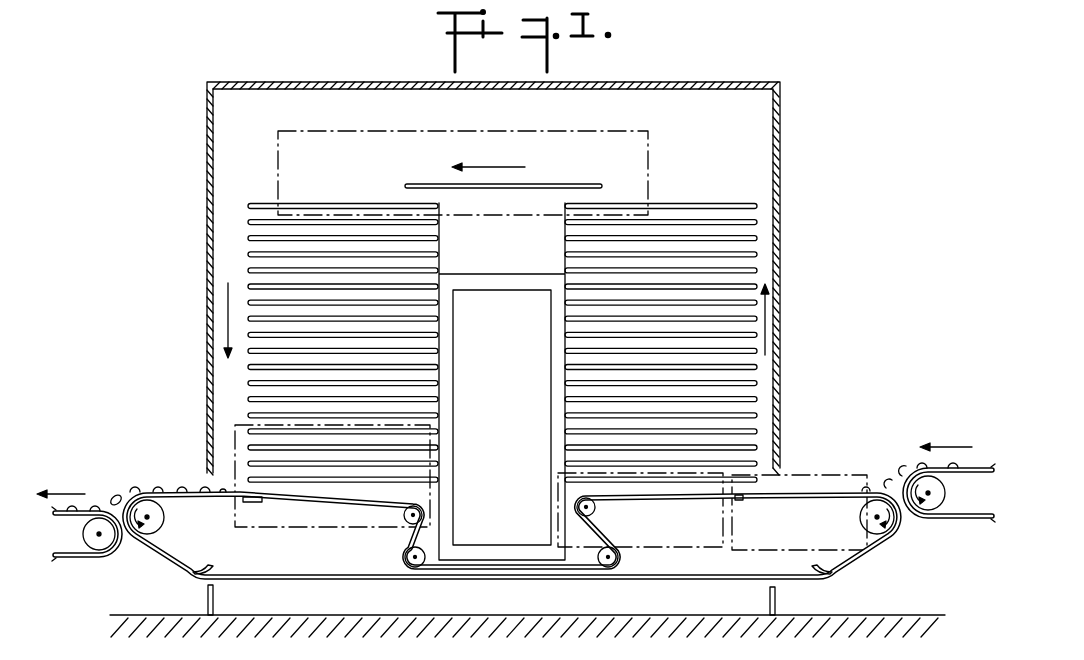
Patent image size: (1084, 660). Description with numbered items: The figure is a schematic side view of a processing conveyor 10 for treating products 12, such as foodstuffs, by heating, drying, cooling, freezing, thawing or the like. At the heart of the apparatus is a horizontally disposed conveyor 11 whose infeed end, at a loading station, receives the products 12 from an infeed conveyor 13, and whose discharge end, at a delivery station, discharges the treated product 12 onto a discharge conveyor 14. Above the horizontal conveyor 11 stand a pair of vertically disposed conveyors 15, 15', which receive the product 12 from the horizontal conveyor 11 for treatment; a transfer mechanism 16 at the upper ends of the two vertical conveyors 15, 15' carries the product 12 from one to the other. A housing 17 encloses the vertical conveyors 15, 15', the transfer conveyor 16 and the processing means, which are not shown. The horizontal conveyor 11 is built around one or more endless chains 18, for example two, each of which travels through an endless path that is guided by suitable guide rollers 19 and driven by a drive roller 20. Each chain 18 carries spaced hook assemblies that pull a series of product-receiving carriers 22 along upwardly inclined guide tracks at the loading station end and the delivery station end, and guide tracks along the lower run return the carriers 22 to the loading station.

The processing conveyor 10 is at (542, 321).
The horizontally disposed conveyor 11 is at (858, 562).
The products 12 is at (118, 497).
The infeed conveyor 13 is at (980, 464).
The discharge conveyor 14 is at (103, 488).
The vertically disposed conveyor 15 is at (661, 328).
The vertically disposed conveyor 15' is at (343, 324).
The transfer mechanism 16 is at (508, 131).
The housing 17 is at (781, 185).
The endless chain 18 is at (694, 575).
The guide rollers 19 is at (409, 521).
The drive roller 20 is at (163, 525).
The product-receiving carriers 22 is at (170, 490).